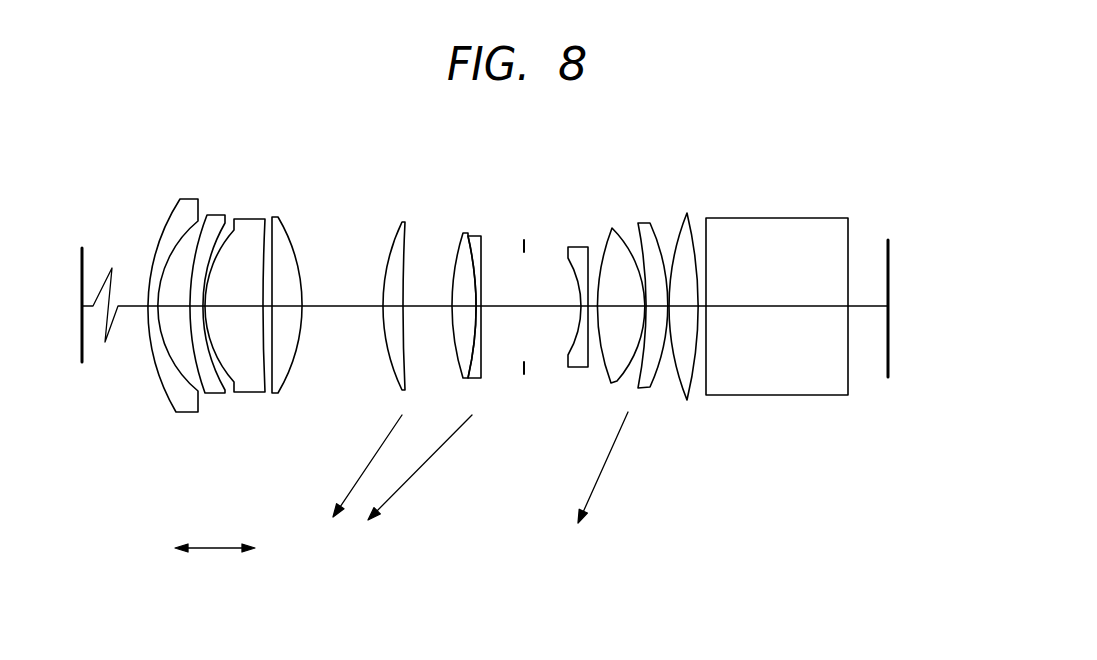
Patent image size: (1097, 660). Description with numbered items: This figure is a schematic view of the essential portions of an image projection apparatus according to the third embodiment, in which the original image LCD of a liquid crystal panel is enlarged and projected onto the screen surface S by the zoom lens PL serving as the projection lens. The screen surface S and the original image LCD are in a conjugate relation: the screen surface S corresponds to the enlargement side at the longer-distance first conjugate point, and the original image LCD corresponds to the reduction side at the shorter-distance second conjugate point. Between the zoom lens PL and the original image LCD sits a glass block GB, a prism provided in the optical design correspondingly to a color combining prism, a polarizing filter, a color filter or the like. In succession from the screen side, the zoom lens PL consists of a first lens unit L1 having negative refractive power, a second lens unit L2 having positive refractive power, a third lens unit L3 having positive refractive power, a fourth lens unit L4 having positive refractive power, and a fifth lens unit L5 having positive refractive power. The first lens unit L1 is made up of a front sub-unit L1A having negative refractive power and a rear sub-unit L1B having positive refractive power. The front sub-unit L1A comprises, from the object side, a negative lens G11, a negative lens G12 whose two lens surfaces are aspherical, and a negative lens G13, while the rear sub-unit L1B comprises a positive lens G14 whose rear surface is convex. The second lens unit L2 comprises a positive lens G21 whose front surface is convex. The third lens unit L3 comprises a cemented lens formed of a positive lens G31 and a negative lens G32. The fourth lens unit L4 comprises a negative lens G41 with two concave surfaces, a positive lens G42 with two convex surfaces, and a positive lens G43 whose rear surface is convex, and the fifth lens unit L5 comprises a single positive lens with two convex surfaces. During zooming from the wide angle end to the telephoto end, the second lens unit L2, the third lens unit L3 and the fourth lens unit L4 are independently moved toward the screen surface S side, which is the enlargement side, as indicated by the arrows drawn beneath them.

The screen surface S is at (83, 262).
The zoom lens PL is at (727, 162).
The first lens unit L1 is at (292, 196).
The 1A-th lens unit L1A is at (287, 483).
The 1B-th lens unit L1B is at (325, 483).
The second lens unit L2 is at (413, 197).
The third lens unit L3 is at (531, 197).
The fourth lens unit L4 is at (665, 197).
The fifth lens unit L5 is at (698, 197).
The negative lens G11 is at (192, 411).
The negative lens G12 is at (219, 395).
The negative lens G13 is at (255, 383).
The positive lens G14 is at (278, 388).
The positive lens G21 is at (390, 342).
The positive lens G31 is at (460, 372).
The negative lens G32 is at (473, 368).
The negative lens G41 is at (580, 368).
The positive lens G42 is at (614, 383).
The positive lens G43 is at (646, 386).
The glass block GB is at (797, 227).
The original image LCD is at (888, 240).